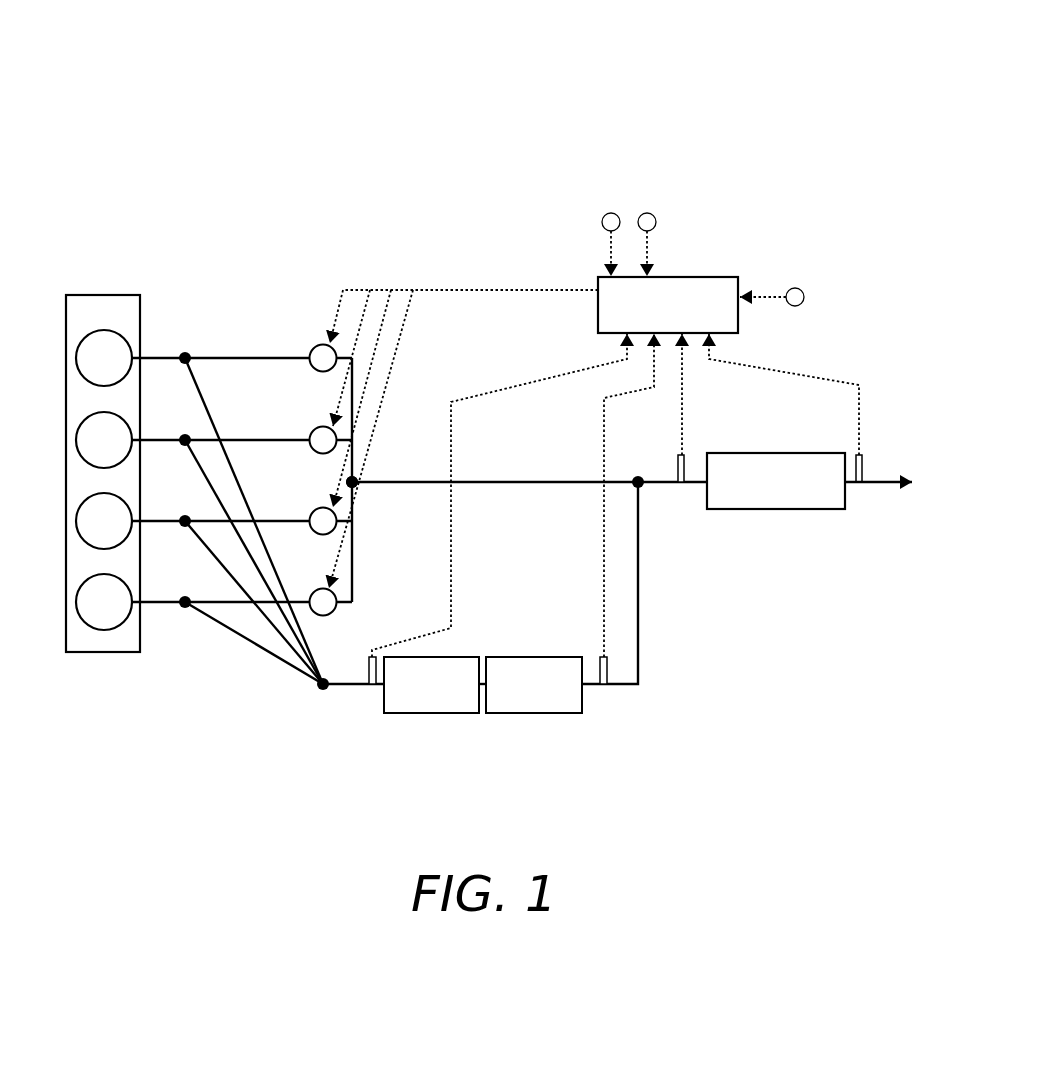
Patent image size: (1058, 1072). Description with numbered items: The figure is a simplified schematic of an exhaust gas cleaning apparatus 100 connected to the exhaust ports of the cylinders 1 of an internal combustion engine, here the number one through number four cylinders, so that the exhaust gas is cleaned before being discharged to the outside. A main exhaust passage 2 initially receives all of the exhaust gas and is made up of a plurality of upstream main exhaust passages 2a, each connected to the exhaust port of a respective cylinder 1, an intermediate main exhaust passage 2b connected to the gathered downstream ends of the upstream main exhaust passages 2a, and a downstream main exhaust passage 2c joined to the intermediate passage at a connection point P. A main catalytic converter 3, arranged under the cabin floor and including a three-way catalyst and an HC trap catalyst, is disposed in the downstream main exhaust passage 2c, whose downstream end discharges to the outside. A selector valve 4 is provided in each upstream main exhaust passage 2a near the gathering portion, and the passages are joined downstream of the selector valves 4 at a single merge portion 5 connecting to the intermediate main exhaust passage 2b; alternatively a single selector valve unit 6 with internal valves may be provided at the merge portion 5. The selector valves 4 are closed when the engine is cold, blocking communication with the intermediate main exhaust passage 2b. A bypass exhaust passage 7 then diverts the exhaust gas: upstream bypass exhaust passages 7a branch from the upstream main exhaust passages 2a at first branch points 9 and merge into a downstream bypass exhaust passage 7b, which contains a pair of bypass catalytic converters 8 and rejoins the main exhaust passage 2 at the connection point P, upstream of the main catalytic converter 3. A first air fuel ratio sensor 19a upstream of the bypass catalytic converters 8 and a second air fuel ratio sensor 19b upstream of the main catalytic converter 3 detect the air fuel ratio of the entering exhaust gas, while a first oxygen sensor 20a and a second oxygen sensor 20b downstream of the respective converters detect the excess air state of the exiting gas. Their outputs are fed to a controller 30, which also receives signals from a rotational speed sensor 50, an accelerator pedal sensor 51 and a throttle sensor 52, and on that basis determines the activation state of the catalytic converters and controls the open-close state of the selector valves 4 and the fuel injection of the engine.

The exhaust gas cleaning apparatus 100 is at (604, 98).
The cylinder 1 is at (74, 362).
The main exhaust passage 2 is at (390, 456).
The upstream main exhaust passage 2a is at (243, 355).
The intermediate main exhaust passage 2b is at (480, 482).
The downstream main exhaust passage 2c is at (885, 487).
The main catalytic converter 3 is at (745, 453).
The selector valve 4 is at (312, 350).
The merge portion 5 is at (354, 488).
The selector valve unit 6 is at (352, 482).
The bypass exhaust passage 7 is at (290, 702).
The upstream bypass exhaust passage 7a is at (210, 410).
The downstream bypass exhaust passage 7b is at (355, 685).
The bypass catalytic converter 8 is at (470, 713).
The first branch point 9 is at (187, 350).
The first air fuel ratio sensor 19a is at (360, 657).
The second air fuel ratio sensor 19b is at (685, 460).
The first oxygen sensor 20a is at (600, 660).
The second oxygen sensor 20b is at (864, 460).
The controller 30 is at (690, 277).
The rotational speed sensor 50 is at (616, 214).
The accelerator pedal sensor 51 is at (652, 214).
The throttle sensor 52 is at (803, 303).
The connection point P is at (638, 478).